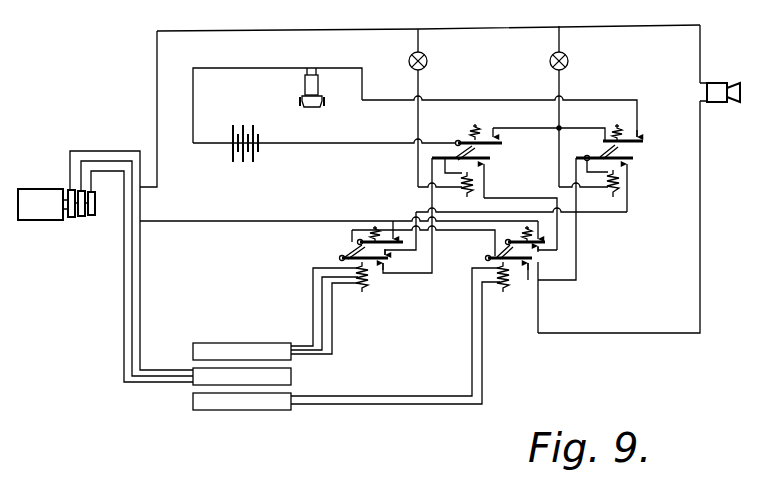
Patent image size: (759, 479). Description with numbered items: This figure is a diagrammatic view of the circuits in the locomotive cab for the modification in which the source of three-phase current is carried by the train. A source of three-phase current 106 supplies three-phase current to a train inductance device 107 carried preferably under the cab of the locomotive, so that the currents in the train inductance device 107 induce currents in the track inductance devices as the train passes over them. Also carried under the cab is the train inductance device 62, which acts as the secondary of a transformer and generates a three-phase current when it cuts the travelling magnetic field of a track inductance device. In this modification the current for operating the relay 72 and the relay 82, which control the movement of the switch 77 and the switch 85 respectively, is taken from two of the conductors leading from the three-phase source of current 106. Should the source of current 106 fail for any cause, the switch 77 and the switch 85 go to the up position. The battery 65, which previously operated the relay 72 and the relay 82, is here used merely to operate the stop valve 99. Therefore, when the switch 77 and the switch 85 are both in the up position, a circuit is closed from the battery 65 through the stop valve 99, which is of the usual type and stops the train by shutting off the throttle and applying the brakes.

The stop valve 99 is at (303, 83).
The battery 65 is at (255, 157).
The switch 77 is at (496, 148).
The relay 72 is at (472, 183).
The switch 85 is at (630, 148).
The relay 82 is at (618, 180).
The source of three-phase current 106 is at (46, 220).
The train inductance device 62 is at (230, 343).
The train inductance device 107 is at (291, 376).